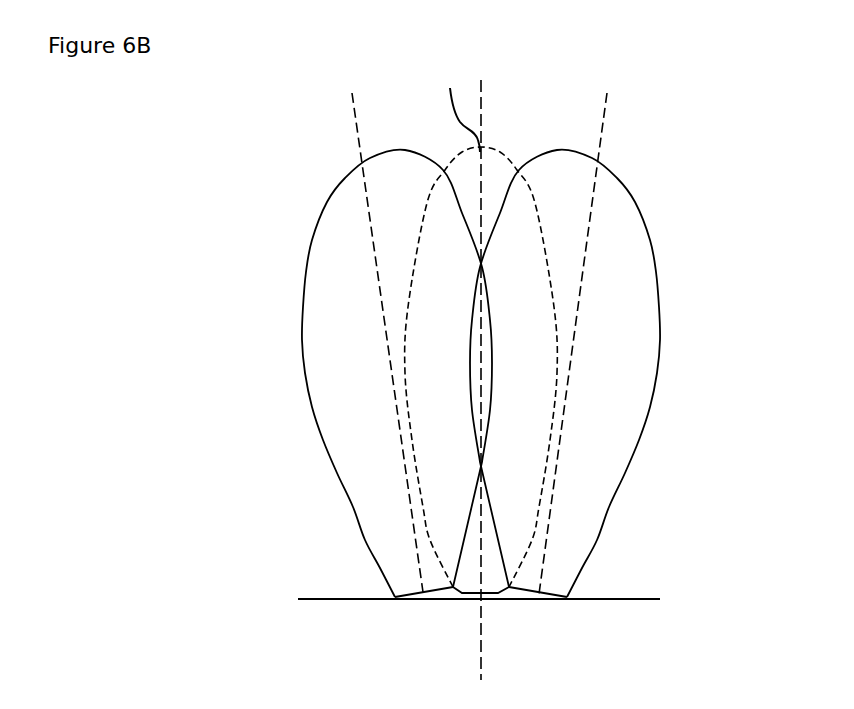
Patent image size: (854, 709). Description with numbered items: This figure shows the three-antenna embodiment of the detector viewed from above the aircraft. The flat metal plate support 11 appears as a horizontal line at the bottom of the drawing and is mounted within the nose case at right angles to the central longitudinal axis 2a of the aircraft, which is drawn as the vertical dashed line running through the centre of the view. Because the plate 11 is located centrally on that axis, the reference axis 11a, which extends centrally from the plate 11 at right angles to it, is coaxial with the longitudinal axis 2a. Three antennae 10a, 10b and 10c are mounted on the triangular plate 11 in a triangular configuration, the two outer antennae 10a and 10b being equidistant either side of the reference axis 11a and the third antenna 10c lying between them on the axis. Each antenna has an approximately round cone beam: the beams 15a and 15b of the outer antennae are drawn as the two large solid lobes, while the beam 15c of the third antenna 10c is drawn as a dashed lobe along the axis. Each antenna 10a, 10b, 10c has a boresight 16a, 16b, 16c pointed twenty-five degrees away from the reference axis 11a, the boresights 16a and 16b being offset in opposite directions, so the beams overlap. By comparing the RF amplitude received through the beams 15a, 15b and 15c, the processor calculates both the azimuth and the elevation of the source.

The central longitudinal axis of the aircraft 2a is at (478, 658).
The antenna 10a is at (417, 583).
The antenna 10b is at (545, 580).
The antenna 10c is at (468, 602).
The plate support 11 is at (627, 602).
The reference axis 11a is at (482, 135).
The cone beam 15a is at (327, 202).
The cone beam 15b is at (642, 213).
The cone beam 15c is at (458, 153).
The boresight 16a is at (377, 260).
The boresight 16b is at (582, 278).
The boresight 16c is at (456, 102).